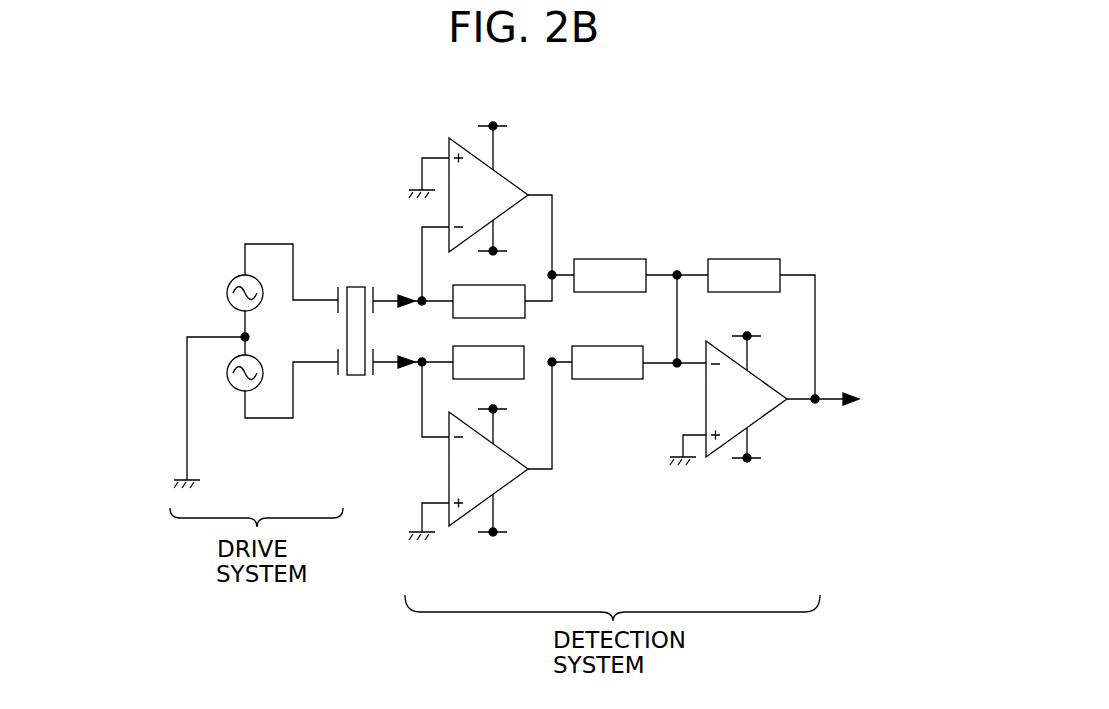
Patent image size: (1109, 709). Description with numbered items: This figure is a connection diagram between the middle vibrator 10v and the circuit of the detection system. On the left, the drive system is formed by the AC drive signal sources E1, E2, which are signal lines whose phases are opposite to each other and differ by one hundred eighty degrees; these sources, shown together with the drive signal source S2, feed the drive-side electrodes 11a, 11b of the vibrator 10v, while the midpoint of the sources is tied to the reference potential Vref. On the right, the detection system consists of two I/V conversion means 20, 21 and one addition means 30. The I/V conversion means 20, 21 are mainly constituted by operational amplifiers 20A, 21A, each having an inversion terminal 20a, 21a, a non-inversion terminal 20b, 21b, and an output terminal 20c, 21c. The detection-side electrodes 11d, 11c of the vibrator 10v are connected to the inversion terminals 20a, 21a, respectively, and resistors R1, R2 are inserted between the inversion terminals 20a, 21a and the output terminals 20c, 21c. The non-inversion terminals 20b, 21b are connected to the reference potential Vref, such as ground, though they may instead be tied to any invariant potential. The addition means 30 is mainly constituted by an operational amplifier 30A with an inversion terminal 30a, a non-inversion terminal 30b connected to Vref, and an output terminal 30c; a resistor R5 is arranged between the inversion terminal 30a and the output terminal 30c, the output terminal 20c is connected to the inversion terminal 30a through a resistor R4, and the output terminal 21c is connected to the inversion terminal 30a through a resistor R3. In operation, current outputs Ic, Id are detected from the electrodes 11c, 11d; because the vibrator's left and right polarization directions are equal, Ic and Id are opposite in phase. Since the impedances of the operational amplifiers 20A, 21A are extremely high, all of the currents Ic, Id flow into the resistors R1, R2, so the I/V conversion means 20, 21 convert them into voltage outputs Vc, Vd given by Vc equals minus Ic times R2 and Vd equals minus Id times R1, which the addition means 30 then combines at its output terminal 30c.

The middle vibrator 10v is at (353, 281).
The electrode 11a is at (322, 363).
The electrode 11b is at (315, 297).
The electrode 11c is at (387, 365).
The electrode 11d is at (378, 297).
The I/V conversion means 20 is at (516, 210).
The operational amplifier 20A is at (493, 190).
The inversion terminal 20a is at (422, 233).
The non-inversion terminal 20b is at (430, 152).
The output terminal 20c is at (543, 190).
The I/V conversion means 21 is at (482, 468).
The operational amplifier 21A is at (463, 487).
The inversion terminal 21a is at (436, 444).
The non-inversion terminal 21b is at (438, 510).
The output terminal 21c is at (542, 470).
The addition means 30 is at (750, 381).
The operational amplifier 30A is at (755, 403).
The inversion terminal 30a is at (695, 365).
The non-inversion terminal 30b is at (683, 445).
The output terminal 30c is at (800, 402).
The AC drive signal source E1 is at (229, 293).
The AC drive signal source E2 is at (229, 373).
The drive signal source S2 is at (262, 346).
The resistor R1 is at (489, 301).
The resistor R2 is at (488, 362).
The resistor R3 is at (629, 362).
The resistor R4 is at (630, 275).
The resistor R5 is at (744, 329).
The reference potential Vref is at (162, 482).
The voltage output Vd is at (557, 278).
The voltage output Vc is at (557, 367).
The current output Id is at (413, 288).
The current output Ic is at (413, 351).